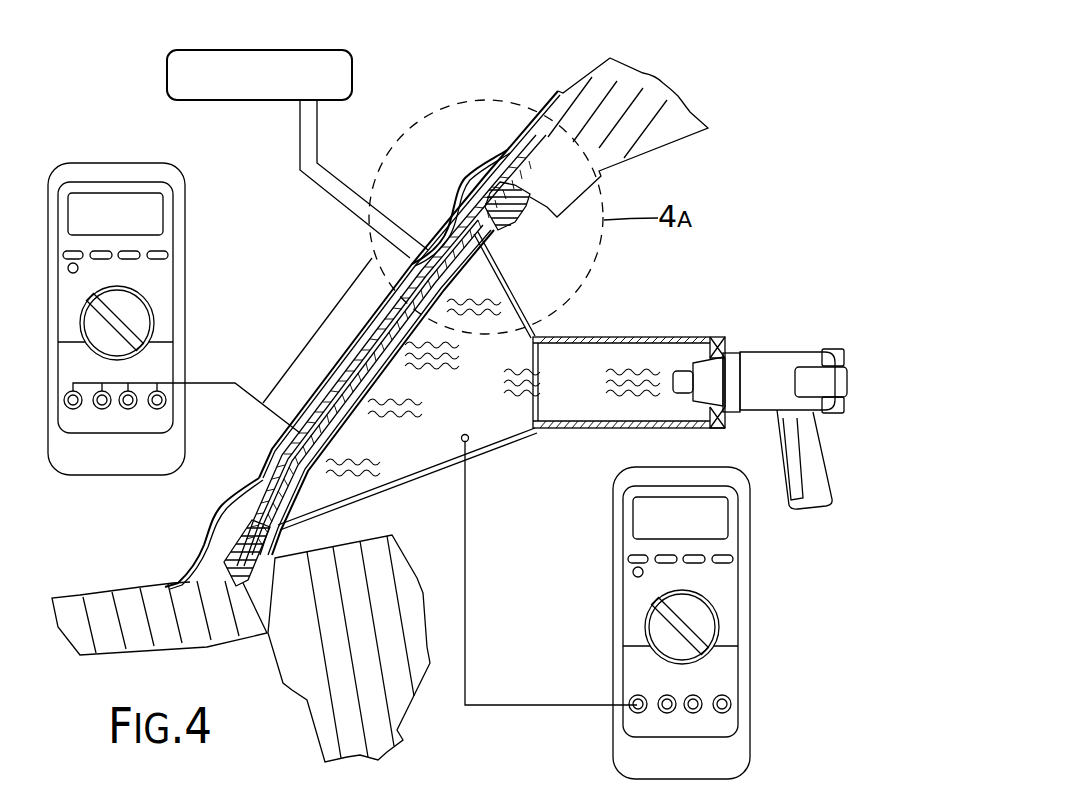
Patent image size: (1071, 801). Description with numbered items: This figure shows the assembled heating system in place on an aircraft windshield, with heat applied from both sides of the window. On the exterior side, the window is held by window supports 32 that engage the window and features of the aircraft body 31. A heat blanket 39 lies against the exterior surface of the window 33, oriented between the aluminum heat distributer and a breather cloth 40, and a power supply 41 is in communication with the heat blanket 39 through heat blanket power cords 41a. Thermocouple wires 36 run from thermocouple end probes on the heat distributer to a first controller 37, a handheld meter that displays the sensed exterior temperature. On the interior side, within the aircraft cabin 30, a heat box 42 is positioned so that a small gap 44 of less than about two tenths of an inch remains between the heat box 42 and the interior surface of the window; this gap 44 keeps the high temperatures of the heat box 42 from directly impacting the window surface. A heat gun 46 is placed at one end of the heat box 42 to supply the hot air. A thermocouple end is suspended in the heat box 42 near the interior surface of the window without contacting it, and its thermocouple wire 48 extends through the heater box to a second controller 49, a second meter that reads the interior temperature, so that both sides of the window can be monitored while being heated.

The aircraft cabin 30 is at (422, 84).
The aircraft body 31 is at (633, 105).
The window supports 32 is at (524, 224).
The exterior surface of the window 33 is at (497, 249).
The thermocouple wires 36 is at (326, 318).
The first controller 37 is at (185, 262).
The heat blanket 39 is at (270, 458).
The breather cloth 40 is at (457, 190).
The power supply 41 is at (318, 50).
The heat blanket power cords 41a is at (300, 157).
The heat box 42 is at (620, 336).
The gap 44 is at (312, 480).
The heat gun 46 is at (816, 349).
The thermocouple wire 48 is at (596, 703).
The second controller 49 is at (613, 570).